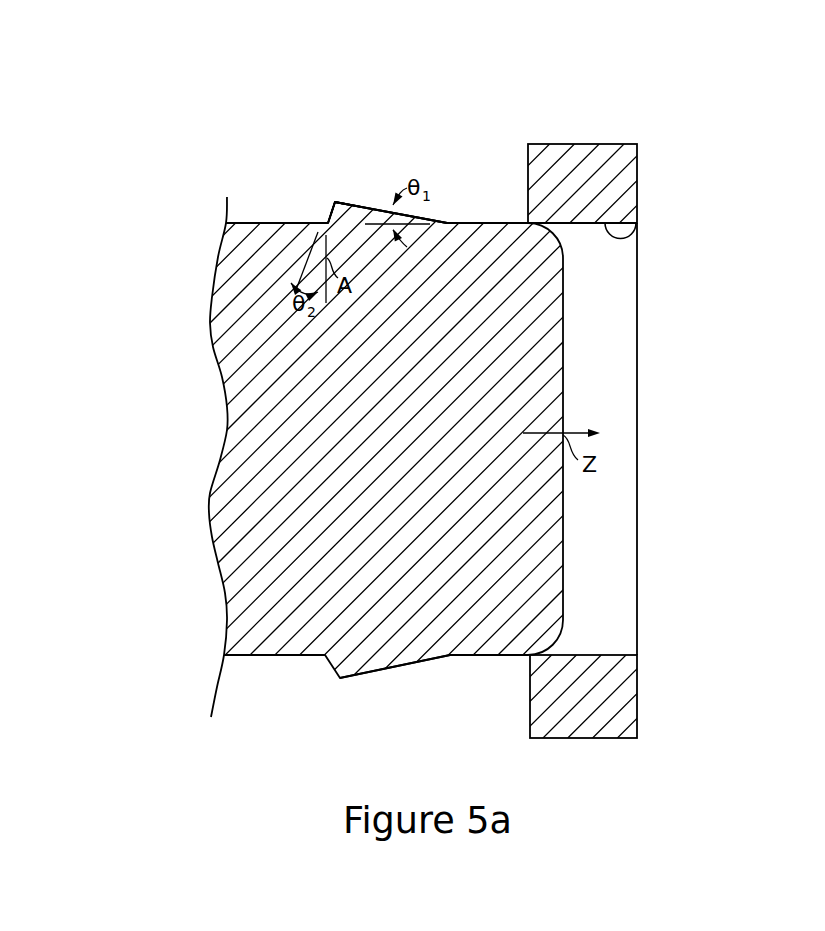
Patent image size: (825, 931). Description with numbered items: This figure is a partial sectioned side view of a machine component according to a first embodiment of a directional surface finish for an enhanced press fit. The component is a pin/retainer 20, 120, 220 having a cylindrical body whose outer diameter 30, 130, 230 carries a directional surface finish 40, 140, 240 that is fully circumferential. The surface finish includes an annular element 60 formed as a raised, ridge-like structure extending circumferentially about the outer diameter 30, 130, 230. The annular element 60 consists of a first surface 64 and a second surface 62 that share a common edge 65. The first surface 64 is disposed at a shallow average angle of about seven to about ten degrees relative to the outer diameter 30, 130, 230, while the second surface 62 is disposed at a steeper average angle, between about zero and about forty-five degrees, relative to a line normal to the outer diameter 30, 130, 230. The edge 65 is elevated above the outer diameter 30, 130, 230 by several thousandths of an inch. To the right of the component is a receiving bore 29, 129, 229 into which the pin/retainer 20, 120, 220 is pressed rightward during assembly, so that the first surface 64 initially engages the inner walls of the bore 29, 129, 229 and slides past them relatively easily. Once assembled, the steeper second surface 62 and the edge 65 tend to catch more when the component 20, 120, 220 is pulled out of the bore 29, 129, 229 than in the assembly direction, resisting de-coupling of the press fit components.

The pin/retainer 20 is at (145, 457).
The pin/retainer 120 is at (145, 457).
The pin/retainer 220 is at (213, 348).
The receiving bore 29 is at (630, 441).
The receiving bore 129 is at (630, 441).
The receiving bore 229 is at (640, 224).
The outer diameter 30 is at (412, 390).
The outer diameter 130 is at (412, 390).
The outer diameter 230 is at (479, 218).
The directional surface finish 40 is at (446, 136).
The directional surface finish 140 is at (446, 136).
The directional surface finish 240 is at (357, 137).
The annular element 60 is at (376, 204).
The second surface 62 is at (328, 221).
The first surface 64 is at (348, 204).
The common edge 65 is at (335, 202).